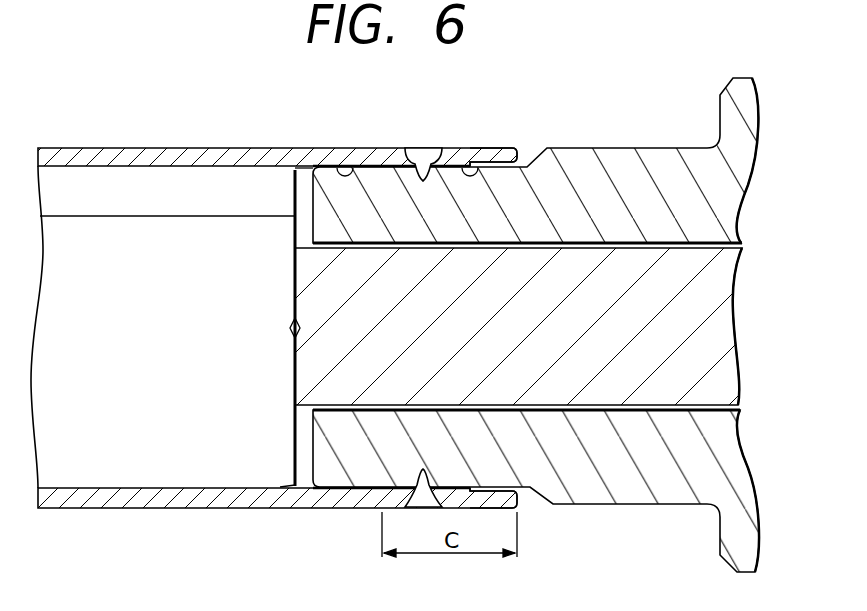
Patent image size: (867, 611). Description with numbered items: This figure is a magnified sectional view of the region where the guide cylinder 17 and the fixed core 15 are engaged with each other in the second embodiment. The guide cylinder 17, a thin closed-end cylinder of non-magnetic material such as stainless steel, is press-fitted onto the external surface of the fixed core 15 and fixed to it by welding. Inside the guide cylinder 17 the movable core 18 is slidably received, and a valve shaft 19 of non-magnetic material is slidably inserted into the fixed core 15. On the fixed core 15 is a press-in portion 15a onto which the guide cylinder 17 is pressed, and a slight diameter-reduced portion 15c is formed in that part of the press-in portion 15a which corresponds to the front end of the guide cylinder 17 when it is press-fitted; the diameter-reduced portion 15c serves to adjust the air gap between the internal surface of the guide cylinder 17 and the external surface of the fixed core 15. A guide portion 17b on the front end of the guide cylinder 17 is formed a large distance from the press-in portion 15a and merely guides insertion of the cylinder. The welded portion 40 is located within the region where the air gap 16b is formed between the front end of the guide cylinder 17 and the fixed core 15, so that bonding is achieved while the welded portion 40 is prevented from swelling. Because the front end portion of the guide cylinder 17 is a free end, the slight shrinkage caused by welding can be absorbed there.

The fixed core 15 is at (610, 158).
The press-in portion 15a is at (351, 166).
The diameter-reduced portion 15c is at (470, 166).
The air gap 16b is at (503, 491).
The guide cylinder 17 is at (174, 158).
The guide portion 17b is at (498, 150).
The movable core 18 is at (95, 192).
The valve shaft 19 is at (727, 325).
The welded portion 40 is at (423, 158).